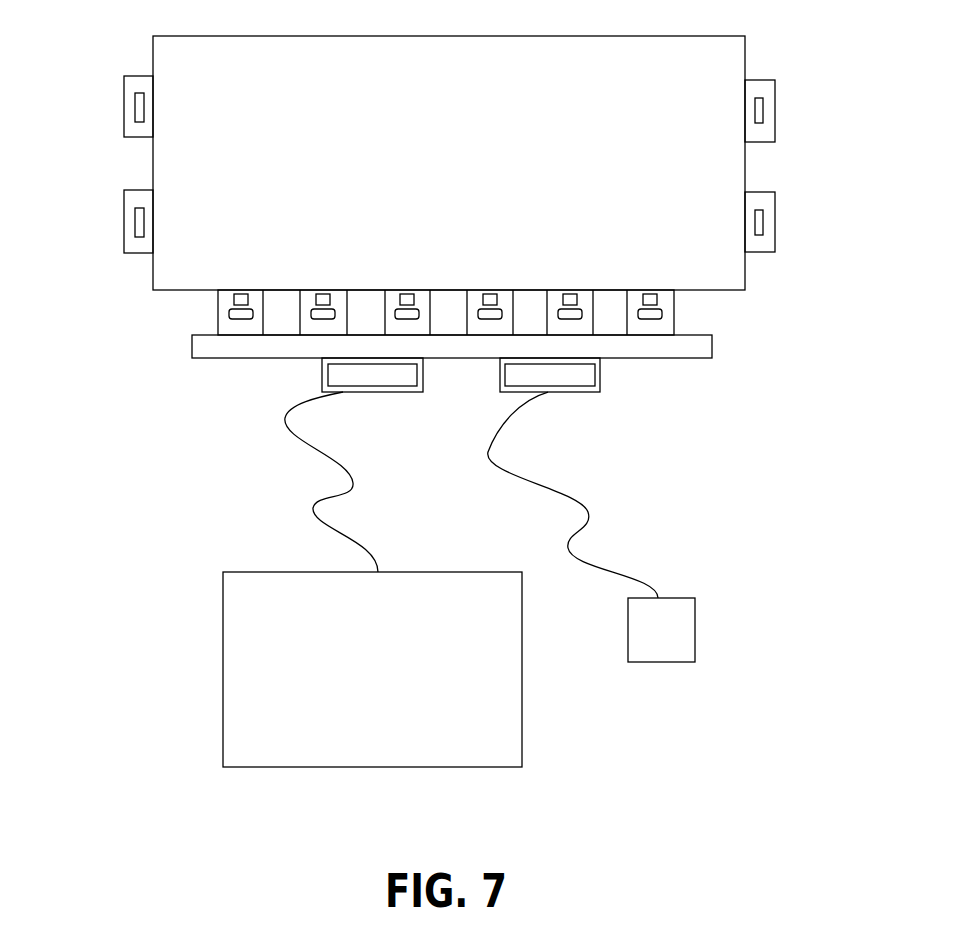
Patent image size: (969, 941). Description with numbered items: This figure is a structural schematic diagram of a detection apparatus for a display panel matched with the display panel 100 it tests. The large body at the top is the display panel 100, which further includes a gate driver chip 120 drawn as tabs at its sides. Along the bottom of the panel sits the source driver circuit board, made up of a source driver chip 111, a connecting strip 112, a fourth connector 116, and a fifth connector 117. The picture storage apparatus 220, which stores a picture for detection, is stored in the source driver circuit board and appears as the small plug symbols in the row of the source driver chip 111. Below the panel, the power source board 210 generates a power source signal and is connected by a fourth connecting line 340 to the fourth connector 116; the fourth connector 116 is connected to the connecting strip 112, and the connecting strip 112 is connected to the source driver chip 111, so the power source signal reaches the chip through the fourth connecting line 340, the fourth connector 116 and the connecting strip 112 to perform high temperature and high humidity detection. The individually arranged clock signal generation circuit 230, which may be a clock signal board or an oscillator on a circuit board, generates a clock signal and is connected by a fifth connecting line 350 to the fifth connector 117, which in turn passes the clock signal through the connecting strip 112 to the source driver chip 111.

The display panel 100 is at (153, 162).
The gate driver chip 120 is at (137, 76).
The source driver chip 111 is at (218, 313).
The connecting strip 112 is at (192, 347).
The fourth connector 116 is at (322, 372).
The fifth connector 117 is at (600, 374).
The picture storage apparatus 220 is at (657, 299).
The fourth connecting line 340 is at (315, 507).
The fifth connecting line 350 is at (588, 512).
The power source board 210 is at (223, 667).
The clock signal generation circuit 230 is at (688, 630).